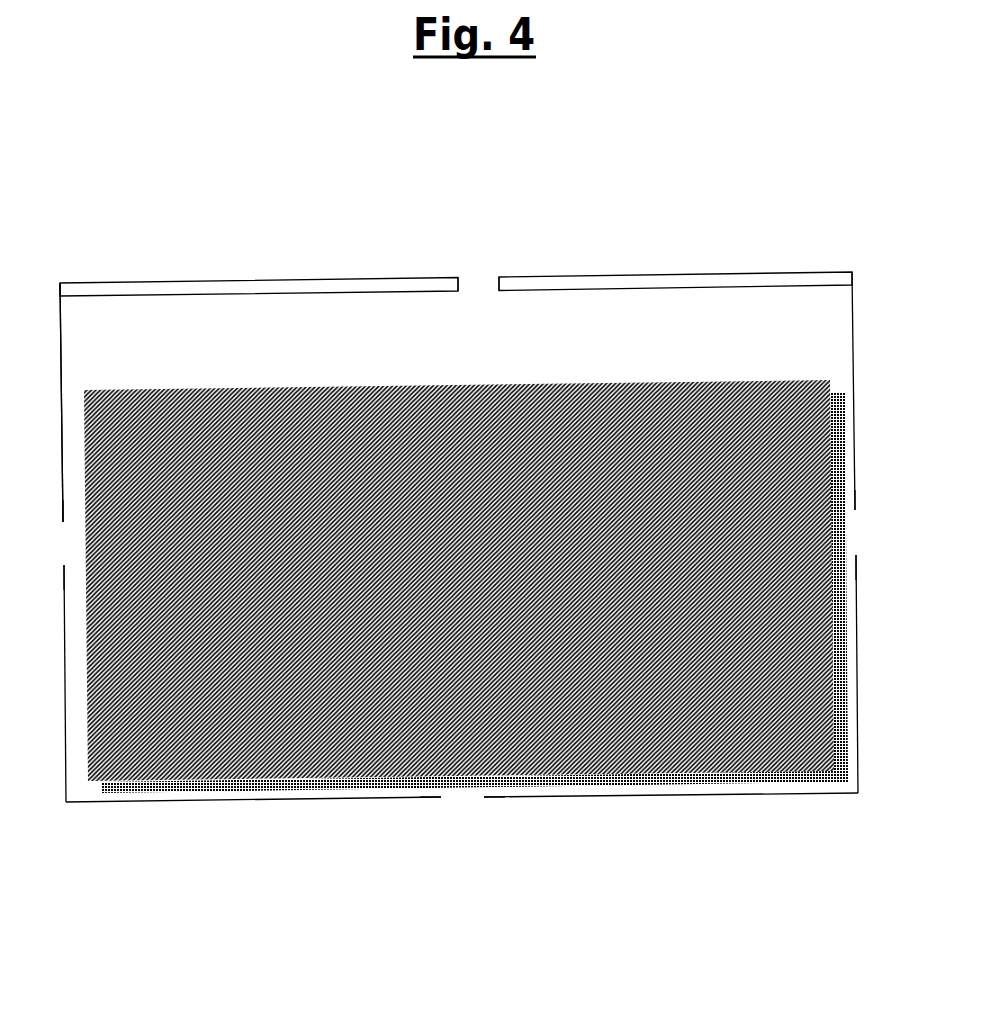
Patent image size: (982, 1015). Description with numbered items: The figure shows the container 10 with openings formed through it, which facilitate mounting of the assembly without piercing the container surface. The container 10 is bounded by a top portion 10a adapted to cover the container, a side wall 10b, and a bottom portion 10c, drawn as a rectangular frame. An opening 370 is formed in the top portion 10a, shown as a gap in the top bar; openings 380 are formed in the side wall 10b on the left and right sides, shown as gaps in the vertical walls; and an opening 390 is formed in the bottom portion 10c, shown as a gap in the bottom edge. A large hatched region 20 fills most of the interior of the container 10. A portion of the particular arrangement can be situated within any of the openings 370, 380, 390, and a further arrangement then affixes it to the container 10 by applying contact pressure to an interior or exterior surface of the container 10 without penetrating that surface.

The container 10 is at (710, 185).
The top portion 10a is at (256, 278).
The side wall 10b is at (69, 323).
The bottom portion 10c is at (287, 802).
The panel 20 is at (529, 738).
The opening 370 is at (475, 262).
The opening 380 is at (66, 548).
The opening 390 is at (448, 826).